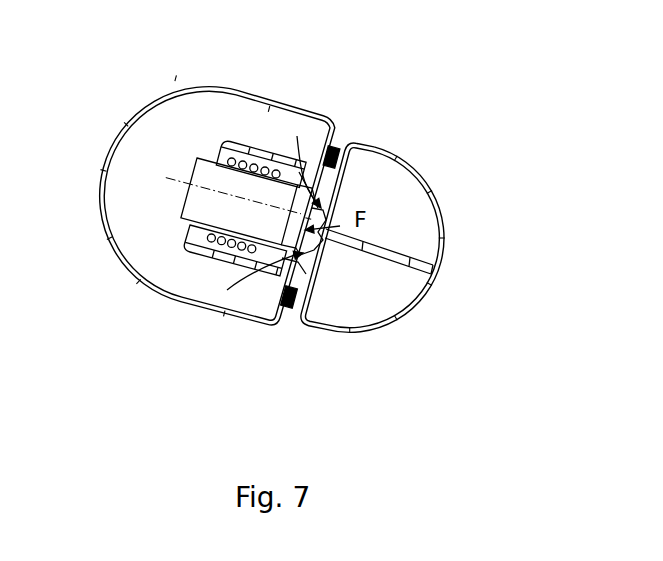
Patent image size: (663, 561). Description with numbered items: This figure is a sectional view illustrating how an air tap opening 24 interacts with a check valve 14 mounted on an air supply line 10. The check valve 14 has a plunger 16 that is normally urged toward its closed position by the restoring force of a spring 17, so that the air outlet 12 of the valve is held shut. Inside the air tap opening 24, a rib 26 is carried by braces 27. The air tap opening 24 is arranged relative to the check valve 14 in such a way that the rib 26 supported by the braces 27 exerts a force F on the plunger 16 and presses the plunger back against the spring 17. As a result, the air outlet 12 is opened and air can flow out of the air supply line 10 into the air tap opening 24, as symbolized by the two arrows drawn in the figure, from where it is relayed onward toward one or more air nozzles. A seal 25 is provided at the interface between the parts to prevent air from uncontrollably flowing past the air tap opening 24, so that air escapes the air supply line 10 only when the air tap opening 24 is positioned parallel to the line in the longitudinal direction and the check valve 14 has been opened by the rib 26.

The air supply line 10 is at (143, 112).
The air outlet 12 is at (319, 140).
The check valve 14 is at (242, 146).
The plunger 16 is at (207, 213).
The spring 17 is at (212, 252).
The air tap opening 24 is at (418, 308).
The seal 25 is at (291, 310).
The rib 26 is at (333, 227).
The braces 27 is at (394, 246).